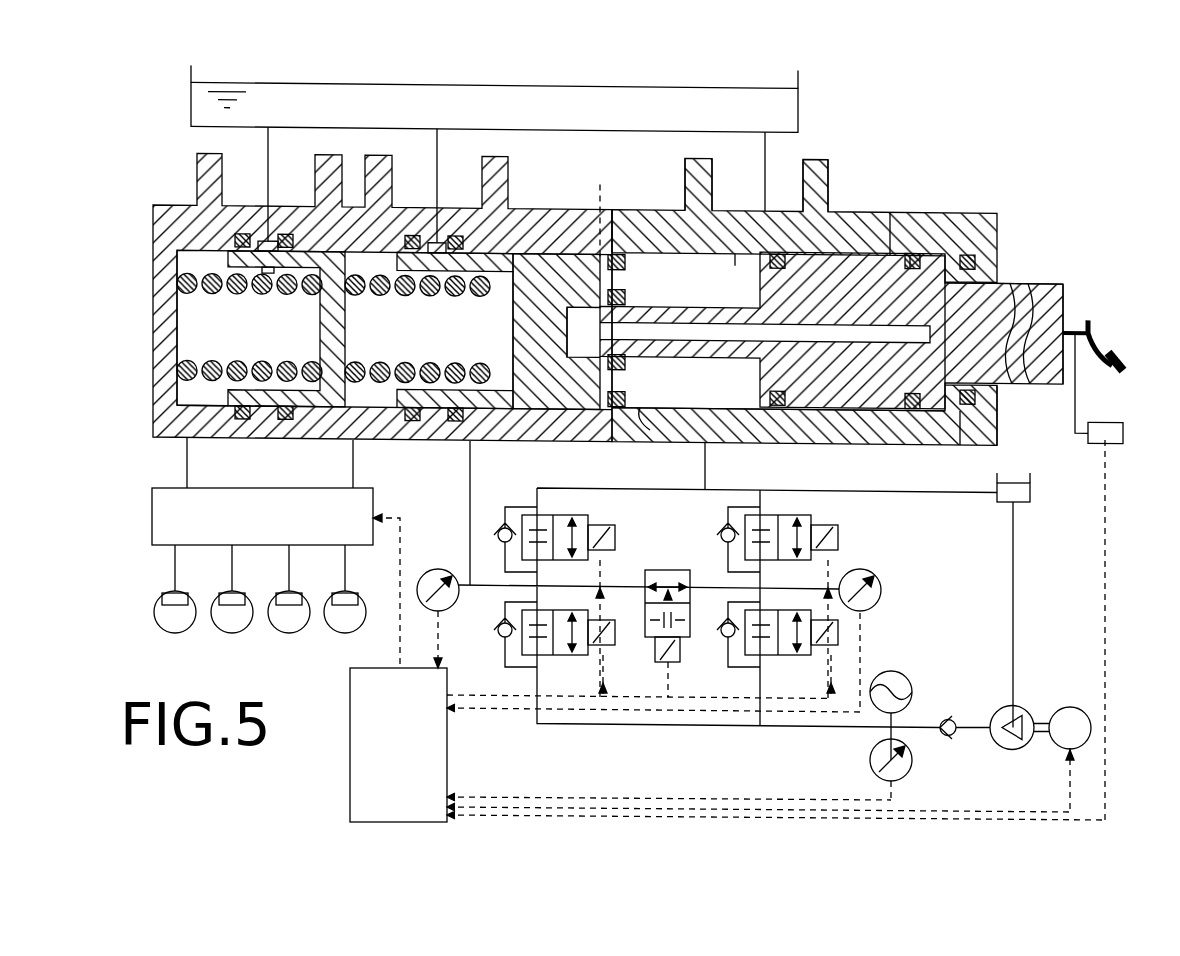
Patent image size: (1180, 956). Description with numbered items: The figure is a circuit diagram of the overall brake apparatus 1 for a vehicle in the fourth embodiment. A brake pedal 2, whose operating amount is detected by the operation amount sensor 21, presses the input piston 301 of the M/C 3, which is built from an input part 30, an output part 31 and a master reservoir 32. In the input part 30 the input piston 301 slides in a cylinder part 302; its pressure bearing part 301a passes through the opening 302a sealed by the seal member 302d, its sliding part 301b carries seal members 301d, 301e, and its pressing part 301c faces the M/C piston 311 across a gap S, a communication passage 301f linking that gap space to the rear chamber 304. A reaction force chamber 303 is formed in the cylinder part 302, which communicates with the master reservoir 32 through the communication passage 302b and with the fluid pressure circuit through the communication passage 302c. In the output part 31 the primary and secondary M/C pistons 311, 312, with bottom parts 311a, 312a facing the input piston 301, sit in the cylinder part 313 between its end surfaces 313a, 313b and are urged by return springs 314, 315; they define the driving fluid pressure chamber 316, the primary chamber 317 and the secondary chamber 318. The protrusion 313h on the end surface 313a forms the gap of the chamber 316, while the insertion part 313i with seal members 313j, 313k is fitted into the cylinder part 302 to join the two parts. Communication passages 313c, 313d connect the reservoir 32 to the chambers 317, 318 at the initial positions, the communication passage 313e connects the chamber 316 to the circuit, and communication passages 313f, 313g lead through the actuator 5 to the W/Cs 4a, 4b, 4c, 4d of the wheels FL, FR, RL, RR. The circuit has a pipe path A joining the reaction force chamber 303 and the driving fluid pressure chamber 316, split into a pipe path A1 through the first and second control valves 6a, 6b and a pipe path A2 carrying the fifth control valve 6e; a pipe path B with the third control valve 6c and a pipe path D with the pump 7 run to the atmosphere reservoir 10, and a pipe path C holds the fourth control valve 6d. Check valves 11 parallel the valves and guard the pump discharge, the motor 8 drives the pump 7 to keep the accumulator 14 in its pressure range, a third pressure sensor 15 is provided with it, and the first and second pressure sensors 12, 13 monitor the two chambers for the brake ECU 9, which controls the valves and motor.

The brake apparatus 1 is at (1131, 156).
The brake pedal 2 is at (1125, 362).
The M/C 3 is at (846, 160).
The W/C 4a is at (182, 592).
The W/C 4b is at (239, 592).
The W/C 4c is at (296, 592).
The W/C 4d is at (352, 592).
The actuator for brake fluid pressure control 5 is at (150, 518).
The first control valve 6a is at (781, 610).
The second control valve 6b is at (556, 610).
The third control valve 6c is at (781, 515).
The fourth control valve 6d is at (556, 515).
The fifth control valve 6e is at (680, 655).
The pump 7 is at (1022, 706).
The motor 8 is at (1076, 707).
The brake ECU 9 is at (348, 693).
The atmosphere reservoir 10 is at (1010, 504).
The check valve 11 is at (505, 558).
The first pressure sensor 12 is at (882, 590).
The second pressure sensor 13 is at (430, 570).
The accumulator 14 is at (893, 670).
The third pressure sensor 15 is at (912, 768).
The operation amount sensor 21 is at (1124, 433).
The input part 30 is at (953, 207).
The output part 31 is at (178, 197).
The master reservoir 32 is at (799, 97).
The input piston 301 is at (1000, 400).
The pressure bearing part 301a is at (1040, 445).
The sliding part 301b is at (890, 245).
The pressing part 301c is at (735, 250).
The seal member 301d is at (868, 285).
The seal member 301e is at (910, 250).
The communication passage 301f is at (965, 445).
The cylinder part 302 is at (990, 258).
The opening 302a is at (1000, 290).
The communication passage 302b is at (778, 245).
The communication passage 302c is at (700, 445).
The seal member 302d is at (1018, 258).
The reaction force chamber 303 is at (698, 210).
The rear chamber 304 is at (870, 445).
The M/C piston 311 is at (530, 440).
The bottom part 311a is at (505, 440).
The M/C piston 312 is at (332, 440).
The bottom part 312a is at (345, 262).
The cylinder part 313 is at (178, 223).
The one end surface 313a is at (700, 445).
The other end surface 313b is at (200, 380).
The communication passage 313c is at (445, 235).
The communication passage 313d is at (280, 235).
The communication passage 313e is at (470, 495).
The communication passage 313f is at (370, 440).
The communication passage 313g is at (208, 440).
The protrusion 313h is at (590, 440).
The insertion part 313i is at (625, 250).
The seal member 313j is at (617, 248).
The seal member 313k is at (645, 235).
The return spring 314 is at (455, 440).
The return spring 315 is at (265, 440).
The driving fluid pressure chamber 316 is at (600, 440).
The primary chamber 317 is at (395, 440).
The secondary chamber 318 is at (190, 322).
The pipe path A is at (495, 598).
The pipe path A1 is at (650, 728).
The pipe path A2 is at (645, 575).
The pipe path B is at (790, 490).
The pipe path C is at (520, 503).
The pipe path D is at (937, 727).
The gap S is at (600, 192).